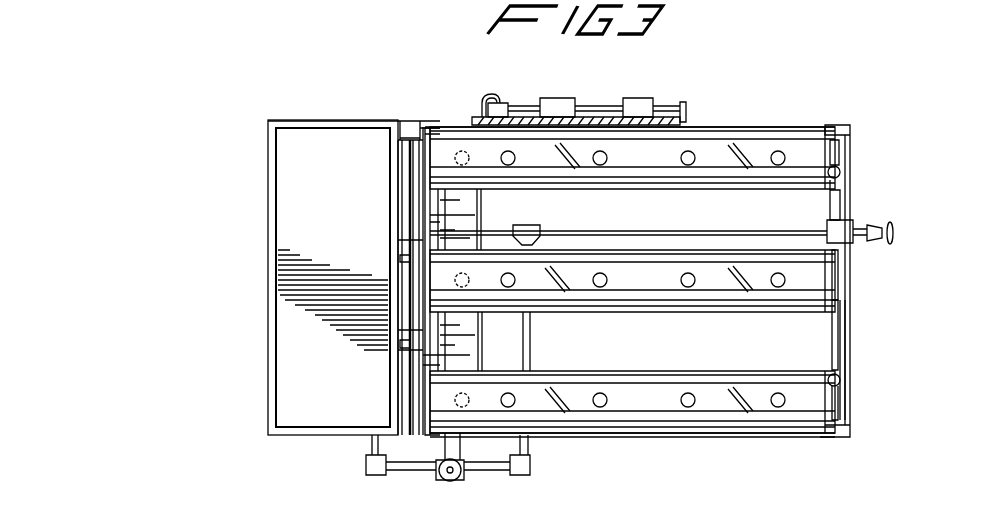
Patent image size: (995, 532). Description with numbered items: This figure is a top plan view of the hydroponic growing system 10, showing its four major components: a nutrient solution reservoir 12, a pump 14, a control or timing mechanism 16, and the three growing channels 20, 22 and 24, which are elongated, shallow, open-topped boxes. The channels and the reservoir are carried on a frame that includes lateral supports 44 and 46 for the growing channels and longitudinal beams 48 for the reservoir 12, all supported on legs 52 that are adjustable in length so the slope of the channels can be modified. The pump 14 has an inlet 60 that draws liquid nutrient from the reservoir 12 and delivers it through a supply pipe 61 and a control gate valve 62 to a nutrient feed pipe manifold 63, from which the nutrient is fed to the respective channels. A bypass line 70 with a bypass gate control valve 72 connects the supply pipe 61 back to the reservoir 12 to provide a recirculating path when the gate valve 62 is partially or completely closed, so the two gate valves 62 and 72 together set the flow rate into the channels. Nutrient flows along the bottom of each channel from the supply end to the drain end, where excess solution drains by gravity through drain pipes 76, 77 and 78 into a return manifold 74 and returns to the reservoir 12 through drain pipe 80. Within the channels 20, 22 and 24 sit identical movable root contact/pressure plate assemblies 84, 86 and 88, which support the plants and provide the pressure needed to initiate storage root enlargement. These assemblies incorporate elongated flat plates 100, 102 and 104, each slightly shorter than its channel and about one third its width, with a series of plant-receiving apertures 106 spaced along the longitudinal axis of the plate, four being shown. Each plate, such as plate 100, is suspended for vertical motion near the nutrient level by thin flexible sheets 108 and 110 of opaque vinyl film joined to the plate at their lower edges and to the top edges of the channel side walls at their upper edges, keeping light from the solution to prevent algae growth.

The hydroponic growing system 10 is at (815, 104).
The nutrient solution reservoir 12 is at (285, 213).
The pump 14 is at (415, 237).
The control or timing mechanism 16 is at (630, 98).
The growing channel 20 is at (778, 127).
The growing channel 22 is at (838, 312).
The growing channel 24 is at (775, 433).
The lateral support 44 is at (435, 215).
The lateral support 46 is at (825, 207).
The longitudinal beam 48 is at (408, 124).
The leg 52 is at (440, 126).
The inlet 60 is at (405, 258).
The supply pipe 61 is at (602, 228).
The control gate valve 62 is at (872, 245).
The nutrient feed pipe manifold 63 is at (846, 343).
The bypass line 70 is at (528, 348).
The bypass gate control valve 72 is at (450, 481).
The return manifold 74 is at (440, 362).
The drain pipe 76 is at (455, 158).
The drain pipe 77 is at (468, 283).
The drain pipe 78 is at (470, 402).
The drain pipe 80 is at (420, 345).
The movable root contact/pressure plate assembly 84 is at (570, 178).
The movable root contact/pressure plate assembly 86 is at (650, 292).
The movable root contact/pressure plate assembly 88 is at (660, 420).
The flat plate 100 is at (710, 150).
The flat plate 102 is at (710, 282).
The flat plate 104 is at (718, 402).
The plant-receiving apertures 106 is at (775, 166).
The thin flexible sheet 108 is at (840, 128).
The thin flexible sheet 110 is at (840, 176).